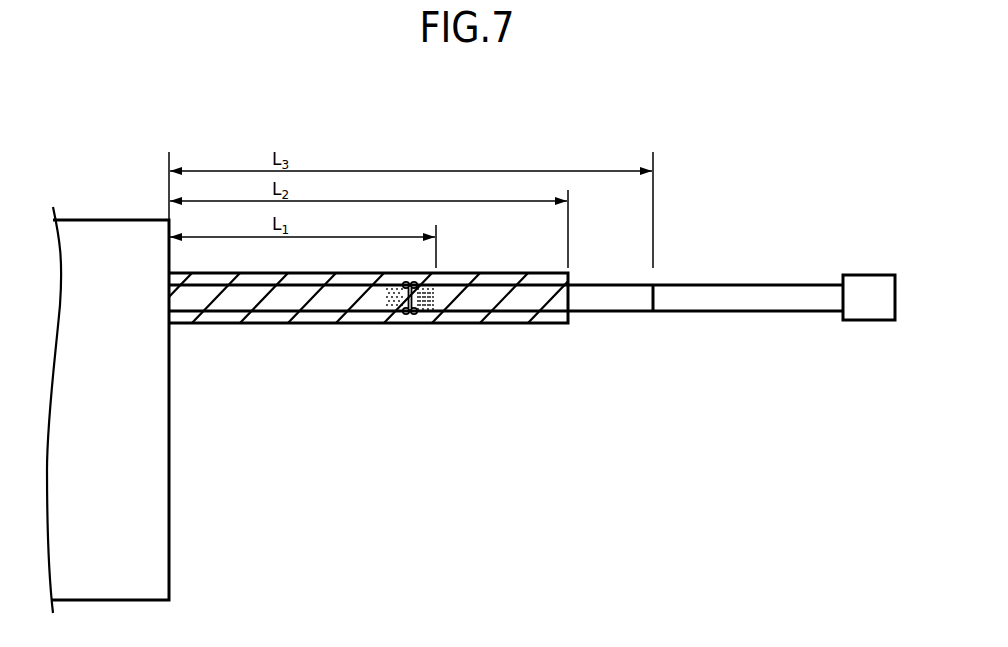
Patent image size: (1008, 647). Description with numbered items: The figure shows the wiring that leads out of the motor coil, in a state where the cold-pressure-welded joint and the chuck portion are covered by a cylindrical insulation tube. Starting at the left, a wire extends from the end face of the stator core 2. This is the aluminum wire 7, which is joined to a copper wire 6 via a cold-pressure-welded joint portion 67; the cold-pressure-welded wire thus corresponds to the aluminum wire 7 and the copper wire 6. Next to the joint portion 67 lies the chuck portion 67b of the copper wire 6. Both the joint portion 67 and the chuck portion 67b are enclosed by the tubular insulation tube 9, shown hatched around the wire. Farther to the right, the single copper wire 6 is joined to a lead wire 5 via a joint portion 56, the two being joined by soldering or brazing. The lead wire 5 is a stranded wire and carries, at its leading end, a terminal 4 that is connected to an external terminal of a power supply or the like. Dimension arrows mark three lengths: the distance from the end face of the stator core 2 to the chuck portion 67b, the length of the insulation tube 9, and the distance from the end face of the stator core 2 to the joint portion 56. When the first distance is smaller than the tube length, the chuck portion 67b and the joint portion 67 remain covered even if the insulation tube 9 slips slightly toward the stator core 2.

The stator core 2 is at (113, 228).
The terminal 4 is at (858, 318).
The lead wire 5 is at (730, 313).
The copper wire 6 is at (605, 313).
The aluminum wire 7 is at (228, 303).
The insulation tube 9 is at (305, 323).
The joint portion 56 is at (653, 313).
The joint portion 67 is at (440, 318).
The chuck portion 67b is at (393, 323).